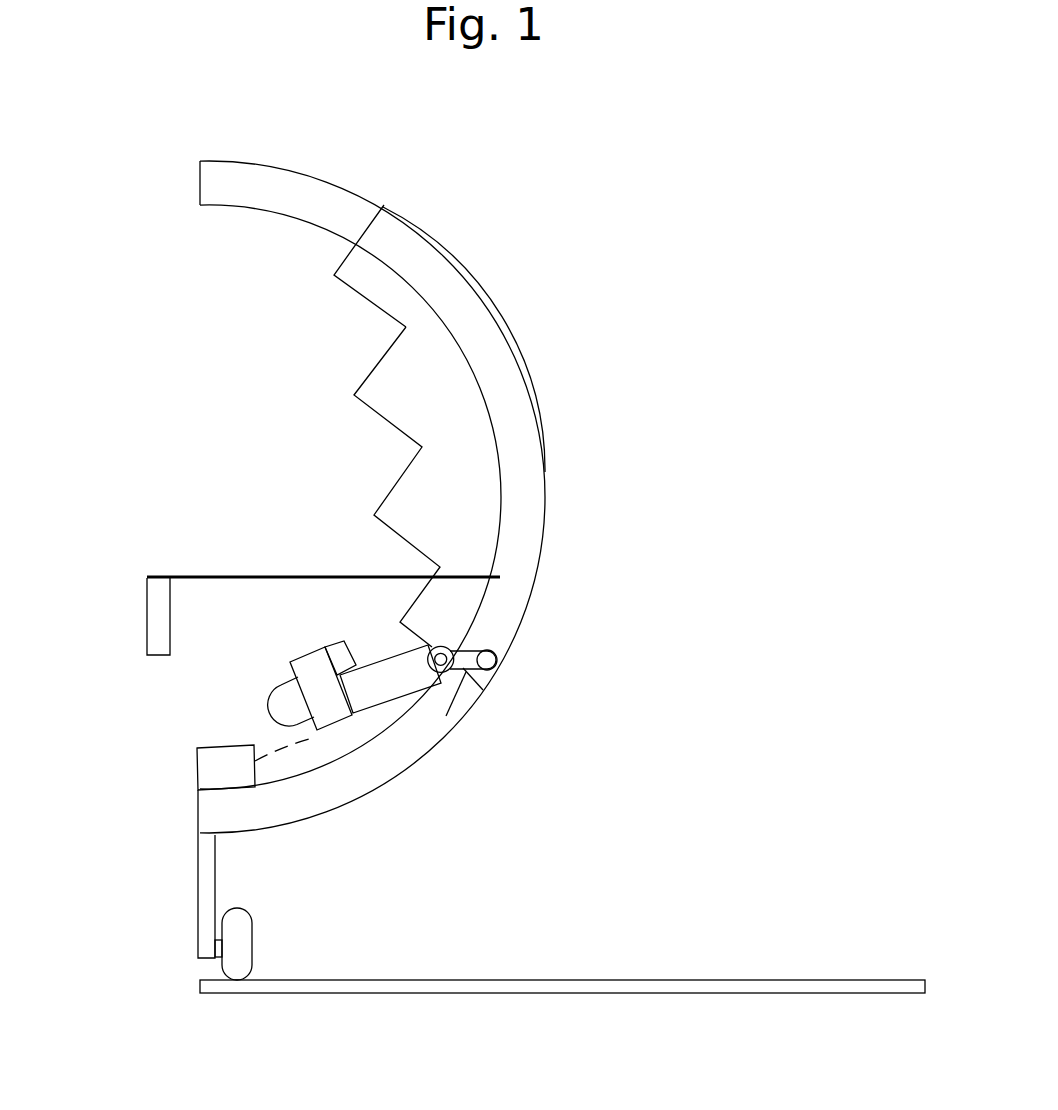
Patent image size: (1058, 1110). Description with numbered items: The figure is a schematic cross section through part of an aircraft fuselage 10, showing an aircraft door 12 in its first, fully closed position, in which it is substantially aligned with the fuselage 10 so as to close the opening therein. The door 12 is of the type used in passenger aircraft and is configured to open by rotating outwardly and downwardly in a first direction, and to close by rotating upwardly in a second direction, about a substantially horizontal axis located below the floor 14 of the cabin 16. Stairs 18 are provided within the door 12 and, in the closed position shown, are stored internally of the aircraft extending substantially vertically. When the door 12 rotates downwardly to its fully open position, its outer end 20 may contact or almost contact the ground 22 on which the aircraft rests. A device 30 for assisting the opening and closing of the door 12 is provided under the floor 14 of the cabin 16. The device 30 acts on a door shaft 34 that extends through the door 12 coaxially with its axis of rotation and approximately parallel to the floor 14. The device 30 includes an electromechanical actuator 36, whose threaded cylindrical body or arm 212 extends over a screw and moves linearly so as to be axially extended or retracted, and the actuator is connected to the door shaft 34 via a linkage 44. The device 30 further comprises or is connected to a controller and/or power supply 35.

The aircraft fuselage 10 is at (262, 176).
The aircraft door 12 is at (505, 332).
The floor 14 is at (207, 577).
The cabin 16 is at (170, 374).
The stairs 18 is at (403, 380).
The outer end 20 is at (375, 222).
The ground 22 is at (200, 985).
The device for assisting opening and closing 30 is at (236, 689).
The door shaft 34 is at (492, 657).
The controller and/or power supply 35 is at (195, 771).
The second electromechanical actuator 36 is at (347, 642).
The linkage 44 is at (472, 652).
The cylindrical body or arm 212 is at (390, 685).